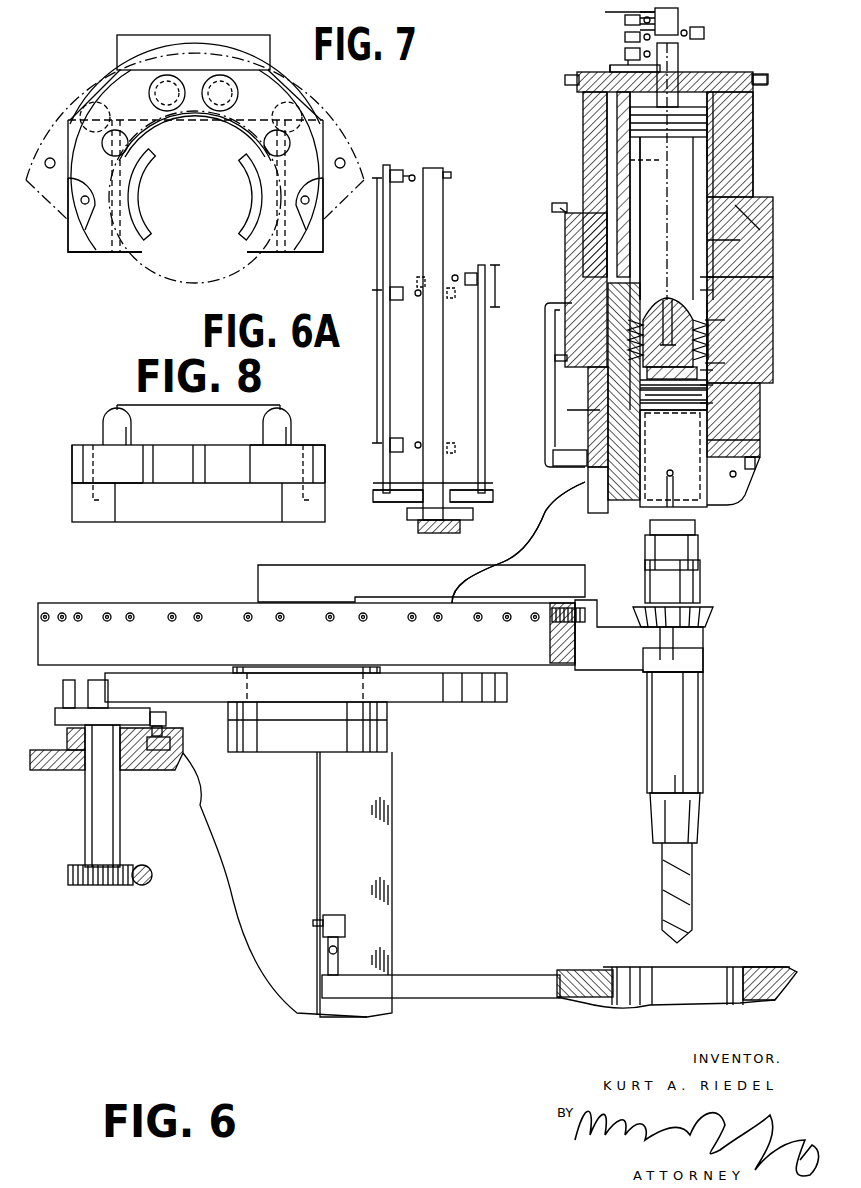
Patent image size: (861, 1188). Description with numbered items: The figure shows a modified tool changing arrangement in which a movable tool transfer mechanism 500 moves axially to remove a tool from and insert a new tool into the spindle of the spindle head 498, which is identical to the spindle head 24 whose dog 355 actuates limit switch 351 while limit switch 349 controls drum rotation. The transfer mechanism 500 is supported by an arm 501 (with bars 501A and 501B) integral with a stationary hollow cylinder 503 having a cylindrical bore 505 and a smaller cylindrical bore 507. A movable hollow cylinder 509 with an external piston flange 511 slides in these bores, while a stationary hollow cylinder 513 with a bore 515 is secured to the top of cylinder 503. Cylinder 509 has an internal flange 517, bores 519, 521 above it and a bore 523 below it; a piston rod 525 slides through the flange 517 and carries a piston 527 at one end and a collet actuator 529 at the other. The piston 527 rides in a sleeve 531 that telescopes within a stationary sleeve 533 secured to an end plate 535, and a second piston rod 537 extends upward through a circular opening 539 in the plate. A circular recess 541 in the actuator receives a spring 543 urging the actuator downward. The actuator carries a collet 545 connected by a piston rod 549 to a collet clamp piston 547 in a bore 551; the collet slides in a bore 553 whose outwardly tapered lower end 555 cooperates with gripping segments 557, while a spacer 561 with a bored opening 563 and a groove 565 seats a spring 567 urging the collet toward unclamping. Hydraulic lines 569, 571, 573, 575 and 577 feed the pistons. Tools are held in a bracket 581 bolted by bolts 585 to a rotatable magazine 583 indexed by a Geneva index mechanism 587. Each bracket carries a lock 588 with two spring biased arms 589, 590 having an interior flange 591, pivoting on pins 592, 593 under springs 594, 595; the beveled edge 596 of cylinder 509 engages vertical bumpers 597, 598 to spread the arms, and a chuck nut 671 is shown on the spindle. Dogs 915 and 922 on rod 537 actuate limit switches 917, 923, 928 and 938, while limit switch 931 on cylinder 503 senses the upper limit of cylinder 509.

In FIG. 6, the spindle head 24 is at (565, 955).
In FIG. 6, the limit switch 349 is at (168, 740).
In FIG. 6, the limit switch 351 is at (323, 920).
In FIG. 6, the dog 355 is at (328, 962).
In FIG. 6, the spindle head 498 is at (735, 518).
In FIG. 6, the tool transfer mechanism 500 is at (748, 105).
In FIG. 6, the support arm 501 is at (547, 445).
In FIG. 6A, the bracket bar 501A is at (386, 378).
In FIG. 6A, the bracket bar 501B is at (486, 320).
In FIG. 6, the stationary hollow cylinder 503 is at (765, 258).
In FIG. 6, the cylindrical bore 505 is at (595, 268).
In FIG. 6, the smaller cylindrical bore 507 is at (580, 420).
In FIG. 7, the movable hollow cylinder 509 is at (240, 272).
In FIG. 6, the movable hollow cylinder 509 is at (748, 430).
In FIG. 6, the piston flange 511 is at (725, 240).
In FIG. 6, the stationary hollow cylinder 513 is at (752, 95).
In FIG. 6, the bore 515 is at (760, 200).
In FIG. 6, the internal flange 517 is at (748, 313).
In FIG. 6, the bore 519 is at (745, 282).
In FIG. 6, the bore 521 is at (712, 168).
In FIG. 6, the bore 523 is at (740, 440).
In FIG. 6A, the piston rod 525 is at (445, 533).
In FIG. 6, the piston rod 525 is at (745, 222).
In FIG. 6A, the piston 527 is at (407, 515).
In FIG. 6, the piston 527 is at (630, 120).
In FIG. 6, the collet actuator 529 is at (735, 365).
In FIG. 6, the sleeve 531 is at (740, 296).
In FIG. 6, the stationary sleeve 533 is at (735, 147).
In FIG. 6A, the end plate 535 is at (495, 493).
In FIG. 6A, the second piston rod 537 is at (440, 215).
In FIG. 6, the second piston rod 537 is at (610, 68).
In FIG. 6, the circular opening 539 is at (678, 65).
In FIG. 6, the circular recess 541 is at (718, 352).
In FIG. 6, the spring 543 is at (720, 340).
In FIG. 6, the collet 545 is at (645, 512).
In FIG. 6, the collet clamp piston 547 is at (640, 385).
In FIG. 6, the piston rod 549 is at (640, 392).
In FIG. 6, the bore 551 is at (725, 375).
In FIG. 6, the bore 553 is at (752, 456).
In FIG. 6, the outwardly tapered lower end 555 is at (728, 502).
In FIG. 6, the gripping segments 557 is at (695, 530).
In FIG. 6, the spacer 561 is at (722, 390).
In FIG. 6, the bored opening 563 is at (712, 405).
In FIG. 6, the groove 565 is at (640, 402).
In FIG. 6, the spring 567 is at (672, 456).
In FIG. 6, the line 569 is at (738, 72).
In FIG. 6, the line 571 is at (590, 110).
In FIG. 6, the line 573 is at (555, 358).
In FIG. 6, the line 575 is at (580, 212).
In FIG. 6, the line 577 is at (618, 155).
In FIG. 7, the bracket 581 is at (117, 52).
In FIG. 8, the bracket 581 is at (315, 515).
In FIG. 6, the bracket 581 is at (695, 655).
In FIG. 6, the ring or magazine 583 is at (440, 568).
In FIG. 6, the bolts 585 is at (580, 607).
In FIG. 6, the Geneva index mechanism 587 is at (136, 788).
In FIG. 7, the tool holder lock 588 is at (327, 130).
In FIG. 6, the tool holder lock 588 is at (717, 632).
In FIG. 7, the arm 589 is at (95, 242).
In FIG. 8, the arm 589 is at (100, 460).
In FIG. 7, the arm 590 is at (295, 243).
In FIG. 8, the arm 590 is at (278, 478).
In FIG. 7, the interior flange 591 is at (200, 257).
In FIG. 7, the pivot pin 592 is at (183, 63).
In FIG. 7, the pivot pin 593 is at (232, 96).
In FIG. 7, the spring 594 is at (195, 137).
In FIG. 7, the spring 595 is at (206, 75).
In FIG. 6A, the beveled edge 596 is at (547, 505).
In FIG. 6, the beveled edge 596 is at (547, 505).
In FIG. 7, the vertical bumper 597 is at (92, 128).
In FIG. 8, the vertical bumper 597 is at (108, 425).
In FIG. 7, the vertical bumper 598 is at (290, 140).
In FIG. 8, the vertical bumper 598 is at (272, 425).
In FIG. 6, the chuck nut 671 is at (713, 610).
In FIG. 6A, the dog 915 is at (415, 185).
In FIG. 6, the dog 915 is at (605, 12).
In FIG. 6A, the limit switch 917 is at (403, 285).
In FIG. 6, the limit switch 917 is at (625, 37).
In FIG. 6A, the dog 922 is at (451, 174).
In FIG. 6, the dog 922 is at (680, 14).
In FIG. 6A, the limit switch 923 is at (470, 270).
In FIG. 6, the limit switch 923 is at (705, 33).
In FIG. 6A, the limit switch 928 is at (395, 170).
In FIG. 6, the limit switch 928 is at (625, 20).
In FIG. 6, the limit switch 931 is at (756, 468).
In FIG. 6A, the limit switch 938 is at (403, 436).
In FIG. 6, the limit switch 938 is at (625, 54).